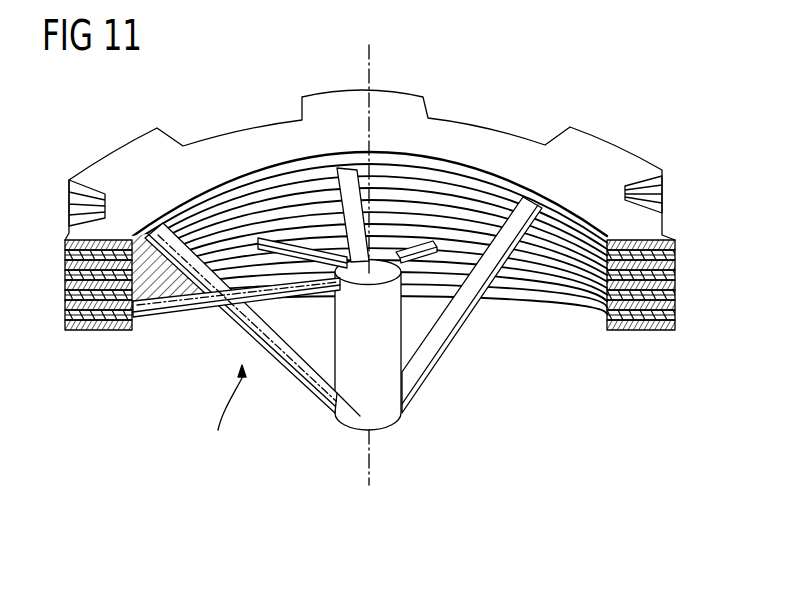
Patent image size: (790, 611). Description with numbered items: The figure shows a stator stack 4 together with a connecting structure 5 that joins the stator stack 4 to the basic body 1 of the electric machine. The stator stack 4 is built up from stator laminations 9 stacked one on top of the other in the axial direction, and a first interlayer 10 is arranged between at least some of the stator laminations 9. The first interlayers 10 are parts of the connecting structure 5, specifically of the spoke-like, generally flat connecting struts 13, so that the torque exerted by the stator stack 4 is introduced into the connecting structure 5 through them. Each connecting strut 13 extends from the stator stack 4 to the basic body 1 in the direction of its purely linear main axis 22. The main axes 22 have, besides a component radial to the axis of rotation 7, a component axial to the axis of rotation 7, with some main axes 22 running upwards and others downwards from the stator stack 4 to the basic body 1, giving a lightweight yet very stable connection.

The basic body 1 is at (386, 415).
The stator stack 4 is at (622, 114).
The connecting structure 5 is at (229, 415).
The axis of rotation 7 is at (372, 62).
The stator laminations 9 is at (63, 264).
The first interlayer 10 is at (675, 274).
The connecting struts 13 is at (292, 243).
The main axis 22 is at (148, 301).